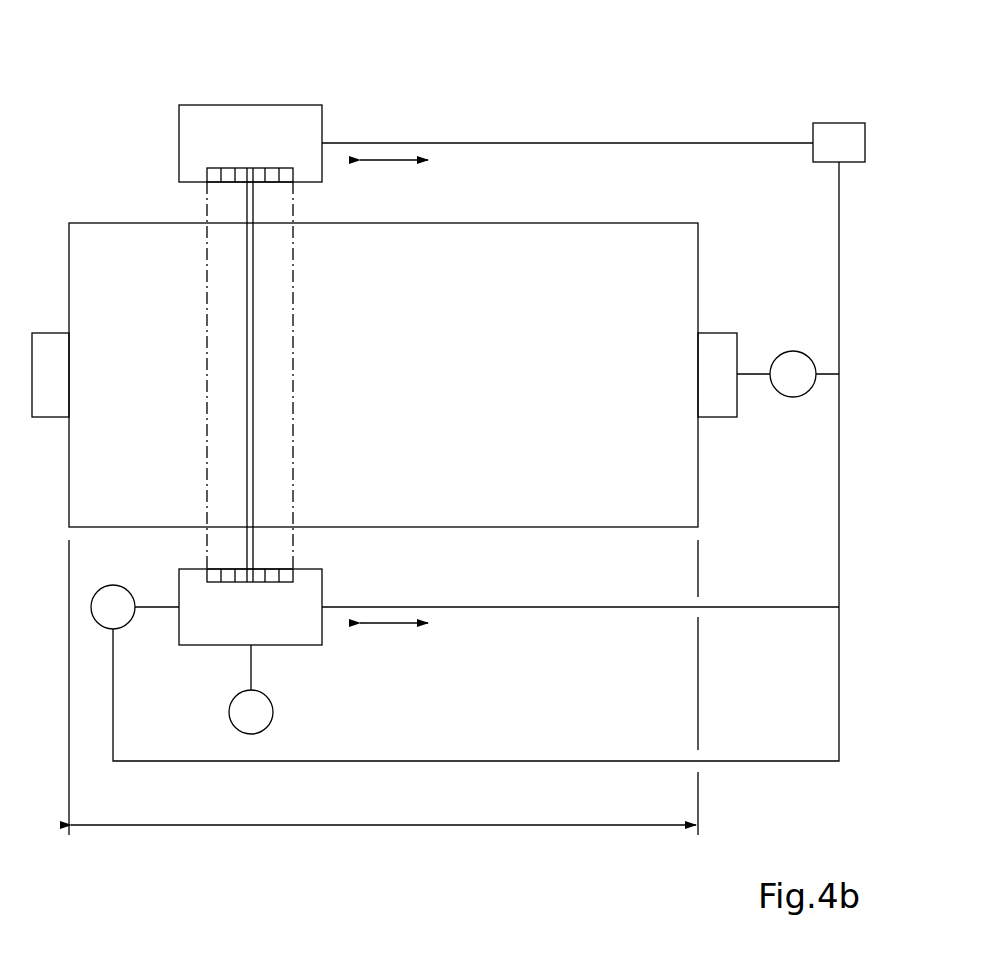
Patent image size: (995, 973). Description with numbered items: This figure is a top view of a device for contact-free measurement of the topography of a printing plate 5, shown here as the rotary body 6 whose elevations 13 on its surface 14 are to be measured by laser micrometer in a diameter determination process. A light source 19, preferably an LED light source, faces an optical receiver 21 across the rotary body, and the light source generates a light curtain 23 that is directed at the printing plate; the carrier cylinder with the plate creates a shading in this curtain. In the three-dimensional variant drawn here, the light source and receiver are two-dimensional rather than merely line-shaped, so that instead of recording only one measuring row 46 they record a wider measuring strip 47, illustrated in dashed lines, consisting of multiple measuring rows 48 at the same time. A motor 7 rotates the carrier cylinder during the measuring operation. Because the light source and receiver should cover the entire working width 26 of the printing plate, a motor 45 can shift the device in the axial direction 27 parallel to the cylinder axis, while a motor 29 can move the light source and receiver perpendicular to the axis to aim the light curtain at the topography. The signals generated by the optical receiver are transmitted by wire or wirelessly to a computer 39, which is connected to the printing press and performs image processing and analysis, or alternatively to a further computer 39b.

The printing plate 5 is at (383, 346).
The rotary body 6 is at (495, 243).
The elevations 13 is at (396, 297).
The surface 14 is at (650, 223).
The optical receiver 21 is at (260, 105).
The light source 19 is at (193, 645).
The measuring row 46 is at (252, 168).
The light curtain 23 is at (247, 248).
The measuring strip 47 is at (207, 328).
The measuring rows 48 is at (273, 153).
The axial direction 27 is at (392, 160).
The computer 39 is at (491, 415).
The further computer 39b is at (838, 142).
The motor 7 is at (793, 397).
The motor 45 is at (110, 584).
The motor 29 is at (272, 722).
The working width 26 is at (553, 823).